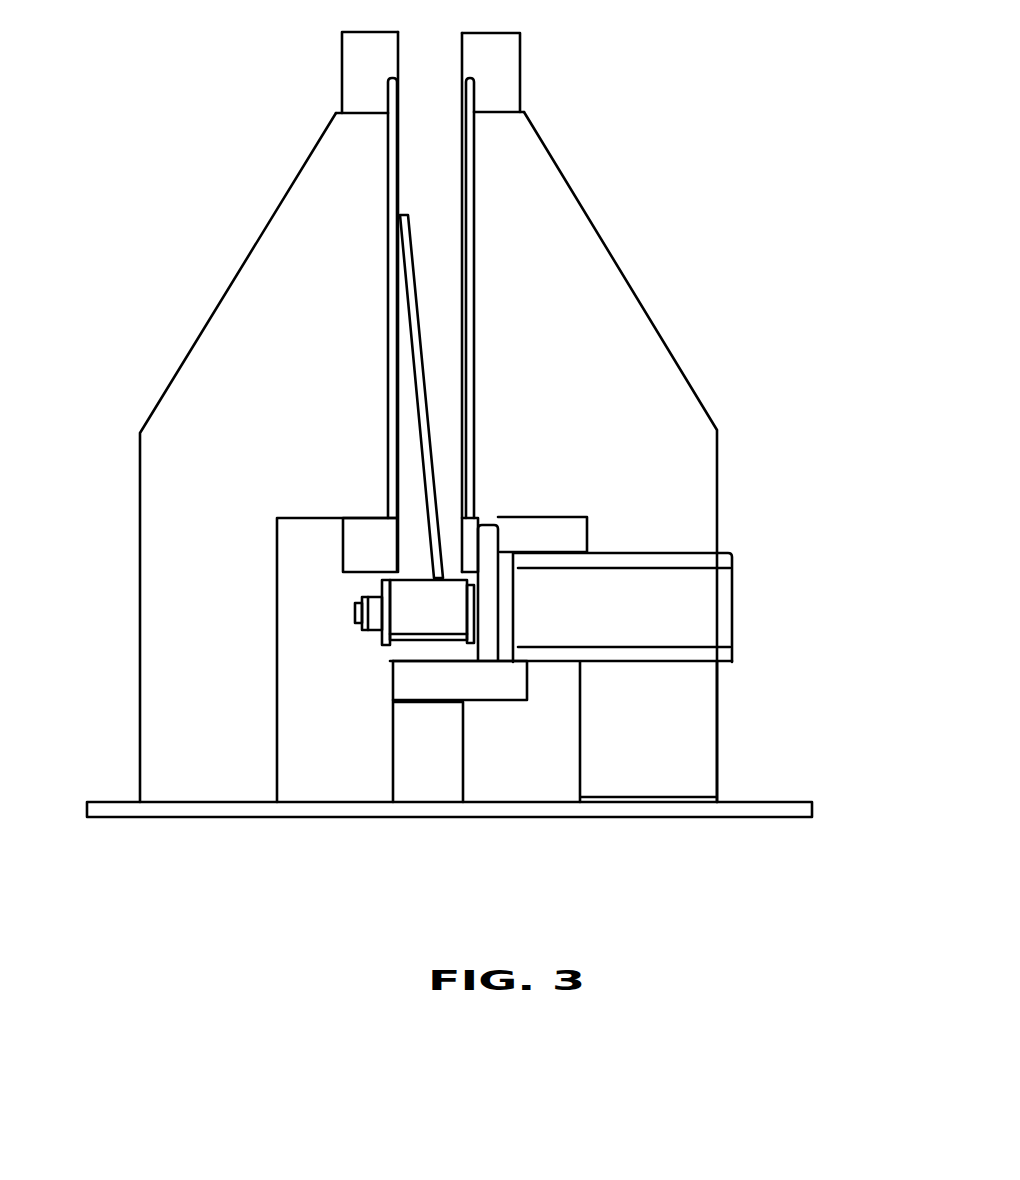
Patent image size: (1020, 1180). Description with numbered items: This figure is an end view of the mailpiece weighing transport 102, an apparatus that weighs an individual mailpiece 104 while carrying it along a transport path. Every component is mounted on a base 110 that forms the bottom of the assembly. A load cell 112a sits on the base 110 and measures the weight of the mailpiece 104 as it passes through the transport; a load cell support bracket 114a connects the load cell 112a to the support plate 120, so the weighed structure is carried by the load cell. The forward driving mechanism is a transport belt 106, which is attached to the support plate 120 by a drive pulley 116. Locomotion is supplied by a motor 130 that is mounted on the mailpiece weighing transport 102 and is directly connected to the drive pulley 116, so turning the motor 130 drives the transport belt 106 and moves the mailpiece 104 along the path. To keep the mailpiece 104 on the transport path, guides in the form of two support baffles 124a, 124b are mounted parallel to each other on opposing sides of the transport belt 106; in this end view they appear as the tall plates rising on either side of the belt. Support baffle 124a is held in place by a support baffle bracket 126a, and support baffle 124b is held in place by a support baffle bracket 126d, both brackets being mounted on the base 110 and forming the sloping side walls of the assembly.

The mailpiece weighing transport 102 is at (623, 170).
The mailpiece 104 is at (408, 237).
The transport belt 106 is at (412, 612).
The base 110 is at (238, 808).
The load cell 112a is at (410, 770).
The load cell support bracket 114a is at (408, 687).
The drive pulley 116 is at (383, 588).
The support plate 120 is at (492, 532).
The support baffle 124a is at (395, 92).
The support baffle 124b is at (468, 92).
The support baffle bracket 126a is at (265, 270).
The support baffle bracket 126d is at (595, 288).
The motor 130 is at (723, 553).